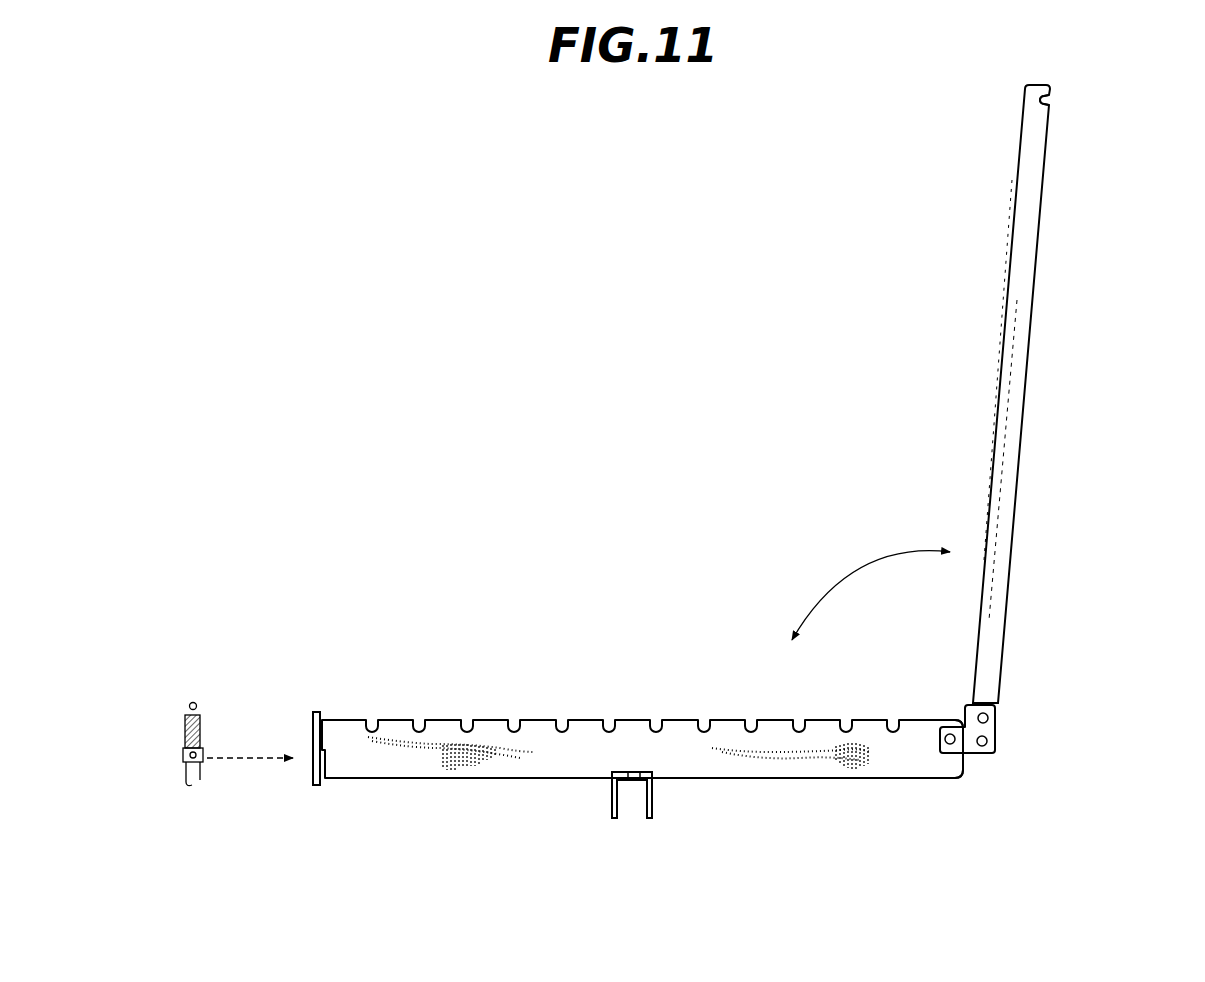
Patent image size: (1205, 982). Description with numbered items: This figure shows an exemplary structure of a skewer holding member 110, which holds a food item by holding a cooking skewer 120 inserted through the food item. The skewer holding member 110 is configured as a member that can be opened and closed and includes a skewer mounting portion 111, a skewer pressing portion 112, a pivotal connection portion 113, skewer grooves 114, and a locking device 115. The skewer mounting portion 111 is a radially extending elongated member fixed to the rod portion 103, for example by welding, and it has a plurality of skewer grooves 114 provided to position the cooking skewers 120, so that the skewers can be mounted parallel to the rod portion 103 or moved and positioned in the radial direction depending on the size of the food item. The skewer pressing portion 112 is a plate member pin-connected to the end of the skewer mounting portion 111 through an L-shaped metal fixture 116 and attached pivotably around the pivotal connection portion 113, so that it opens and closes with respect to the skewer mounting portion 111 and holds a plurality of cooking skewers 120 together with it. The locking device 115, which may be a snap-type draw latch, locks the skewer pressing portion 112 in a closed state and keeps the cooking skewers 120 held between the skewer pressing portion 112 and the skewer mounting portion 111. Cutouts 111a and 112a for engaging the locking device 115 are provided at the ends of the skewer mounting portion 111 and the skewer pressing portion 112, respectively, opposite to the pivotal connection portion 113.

The skewer holding member 110 is at (410, 218).
The skewer mounting portion 111 is at (508, 765).
The cutout 111a is at (332, 793).
The skewer pressing portion 112 is at (1015, 318).
The cutout 112a is at (1056, 101).
The pivotal connection portion 113 is at (950, 758).
The skewer groove 114 is at (466, 710).
The locking device 115 is at (180, 732).
The L-shaped metal fixture 116 is at (1000, 740).
The cooking skewer 120 is at (515, 698).
The rod portion 103 is at (655, 792).